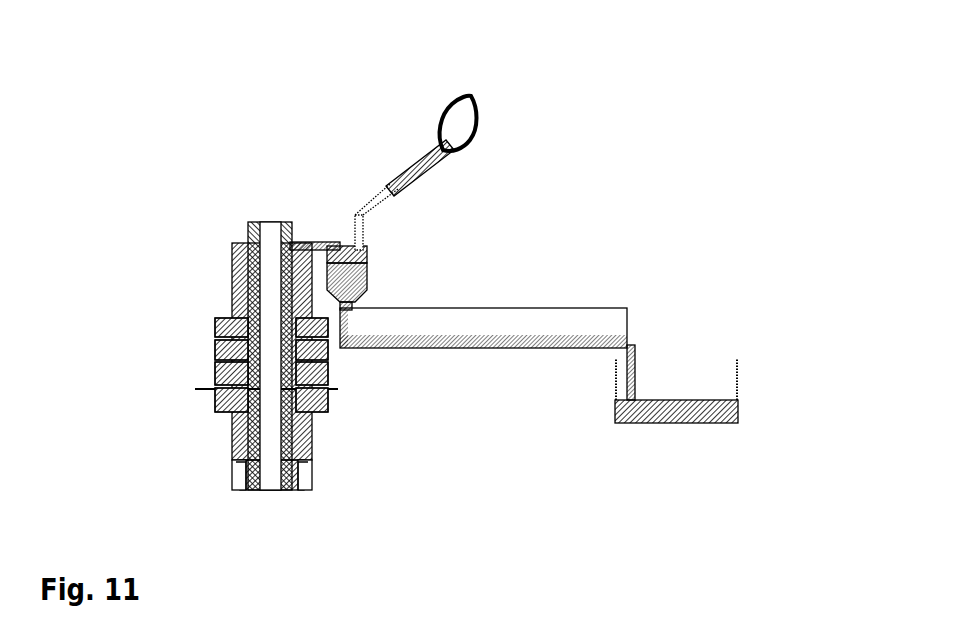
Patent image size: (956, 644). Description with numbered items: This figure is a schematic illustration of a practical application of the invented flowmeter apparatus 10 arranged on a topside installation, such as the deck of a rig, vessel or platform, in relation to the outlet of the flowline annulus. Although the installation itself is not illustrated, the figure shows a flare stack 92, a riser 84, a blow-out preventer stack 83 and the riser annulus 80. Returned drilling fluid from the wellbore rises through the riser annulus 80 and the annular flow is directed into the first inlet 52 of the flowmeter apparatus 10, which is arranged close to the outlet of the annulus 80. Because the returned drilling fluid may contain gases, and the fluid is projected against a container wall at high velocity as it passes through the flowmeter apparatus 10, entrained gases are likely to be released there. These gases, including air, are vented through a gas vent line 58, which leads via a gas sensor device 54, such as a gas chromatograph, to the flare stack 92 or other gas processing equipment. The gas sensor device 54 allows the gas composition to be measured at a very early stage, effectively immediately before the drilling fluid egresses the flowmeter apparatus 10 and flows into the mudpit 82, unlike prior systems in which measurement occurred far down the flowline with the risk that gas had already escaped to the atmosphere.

The flowmeter apparatus 10 is at (368, 277).
The first inlet 52 is at (332, 243).
The gas sensor device 54 is at (368, 265).
The gas vent line 58 is at (352, 213).
The riser annulus 80 is at (255, 240).
The mudpit 82 is at (692, 395).
The blow-out preventer stack 83 is at (212, 325).
The riser 84 is at (247, 278).
The flare stack 92 is at (398, 172).